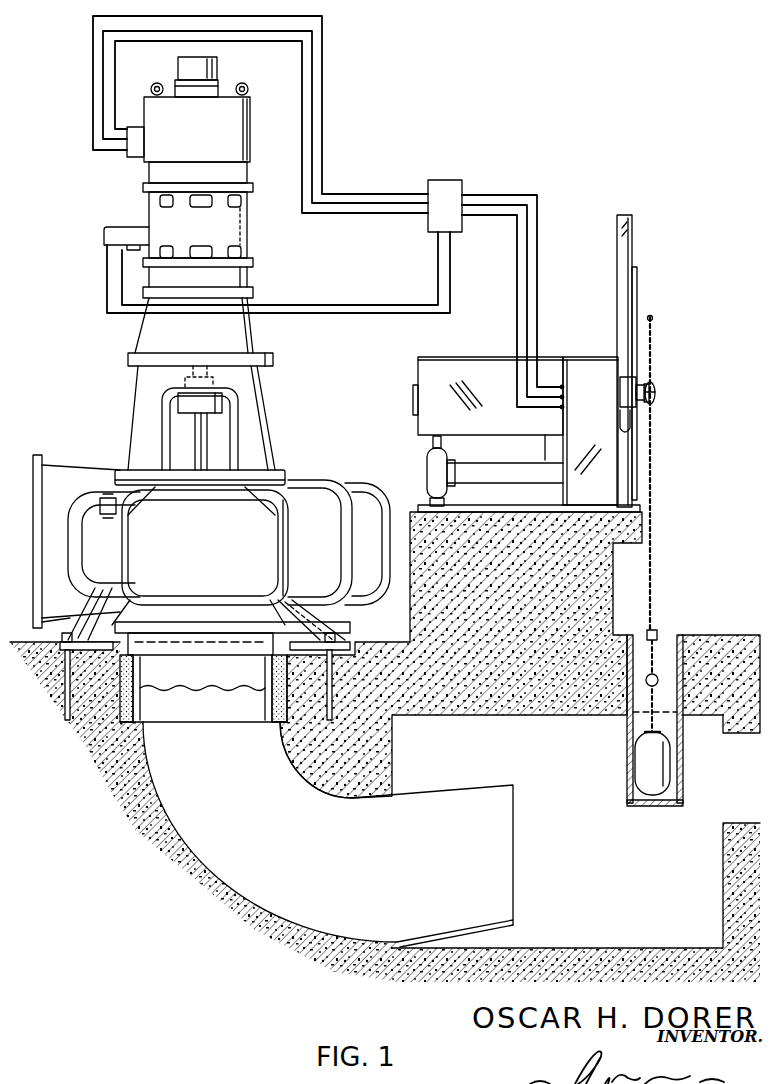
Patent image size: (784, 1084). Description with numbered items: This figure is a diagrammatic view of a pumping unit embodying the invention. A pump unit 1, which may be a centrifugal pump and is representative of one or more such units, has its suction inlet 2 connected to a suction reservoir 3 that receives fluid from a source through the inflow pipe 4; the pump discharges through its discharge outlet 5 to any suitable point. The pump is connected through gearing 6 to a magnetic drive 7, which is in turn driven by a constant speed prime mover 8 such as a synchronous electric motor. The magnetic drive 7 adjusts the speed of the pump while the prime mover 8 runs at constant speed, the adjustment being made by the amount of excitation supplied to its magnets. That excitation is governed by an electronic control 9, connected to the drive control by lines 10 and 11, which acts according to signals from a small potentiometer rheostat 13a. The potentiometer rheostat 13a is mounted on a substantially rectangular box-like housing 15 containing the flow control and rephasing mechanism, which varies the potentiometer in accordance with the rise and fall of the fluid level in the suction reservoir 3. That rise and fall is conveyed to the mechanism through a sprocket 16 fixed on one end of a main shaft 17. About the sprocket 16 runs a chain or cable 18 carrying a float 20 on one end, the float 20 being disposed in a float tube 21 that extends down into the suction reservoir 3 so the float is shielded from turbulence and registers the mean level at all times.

The pump unit 1 is at (306, 478).
The suction inlet 2 is at (228, 708).
The suction reservoir 3 is at (385, 812).
The inflow pipe 4 is at (746, 800).
The discharge outlet 5 is at (55, 482).
The gearing 6 is at (262, 336).
The magnetic drive 7 is at (237, 231).
The constant speed prime mover 8 is at (230, 132).
The electronic control 9 is at (462, 190).
The line 10 is at (340, 316).
The line 11 is at (337, 303).
The potentiometer rheostat 13a is at (624, 394).
The box-like housing 15 is at (579, 358).
The sprocket 16 is at (659, 406).
The main shaft 17 is at (656, 389).
The chain or cable 18 is at (656, 512).
The float 20 is at (649, 786).
The float tube 21 is at (686, 771).